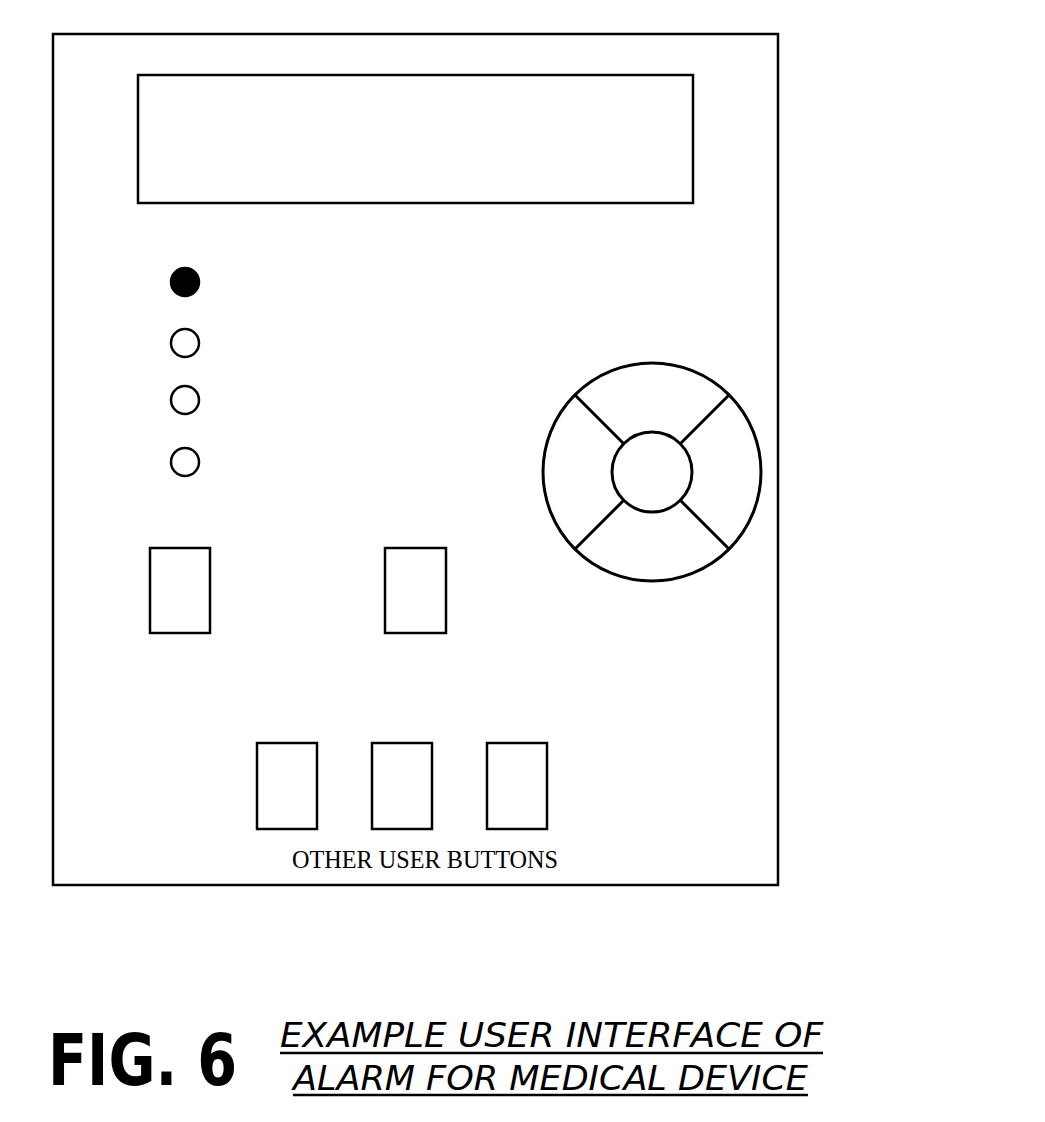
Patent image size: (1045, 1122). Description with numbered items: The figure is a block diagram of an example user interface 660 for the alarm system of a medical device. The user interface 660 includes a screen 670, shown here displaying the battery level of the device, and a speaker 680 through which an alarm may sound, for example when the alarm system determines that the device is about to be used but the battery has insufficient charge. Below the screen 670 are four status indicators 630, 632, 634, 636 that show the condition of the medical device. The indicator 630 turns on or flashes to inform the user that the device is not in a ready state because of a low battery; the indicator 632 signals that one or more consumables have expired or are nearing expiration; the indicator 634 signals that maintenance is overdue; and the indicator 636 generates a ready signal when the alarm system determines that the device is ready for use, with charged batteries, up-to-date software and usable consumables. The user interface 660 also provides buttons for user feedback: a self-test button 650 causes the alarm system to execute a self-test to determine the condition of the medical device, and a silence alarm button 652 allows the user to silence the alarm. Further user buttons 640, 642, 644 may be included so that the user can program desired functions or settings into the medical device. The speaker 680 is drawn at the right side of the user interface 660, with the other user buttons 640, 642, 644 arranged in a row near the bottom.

The user interface 660 is at (778, 34).
The screen 670 is at (693, 75).
The indicator 630 is at (176, 272).
The indicator 632 is at (176, 334).
The indicator 634 is at (176, 391).
The indicator 636 is at (176, 452).
The button 650 is at (150, 548).
The button 652 is at (385, 548).
The user button 640 is at (257, 743).
The user button 642 is at (372, 743).
The user button 644 is at (487, 743).
The speaker 680 is at (693, 368).